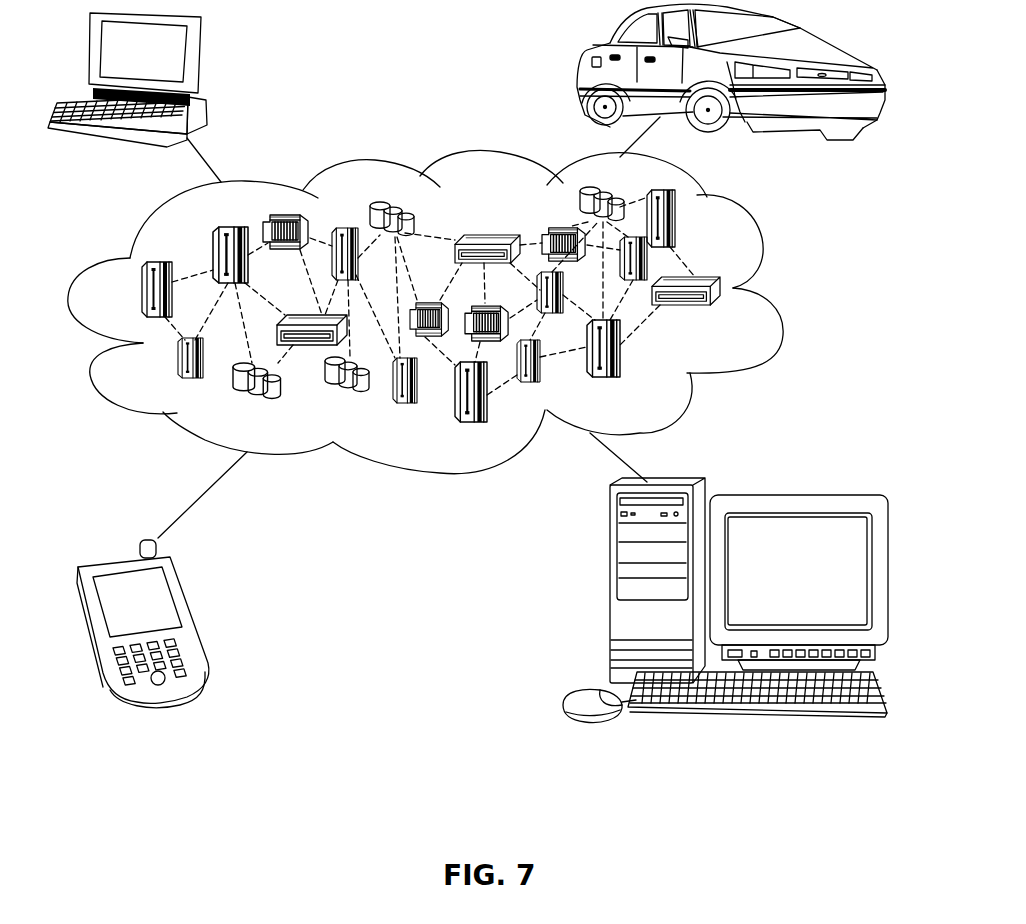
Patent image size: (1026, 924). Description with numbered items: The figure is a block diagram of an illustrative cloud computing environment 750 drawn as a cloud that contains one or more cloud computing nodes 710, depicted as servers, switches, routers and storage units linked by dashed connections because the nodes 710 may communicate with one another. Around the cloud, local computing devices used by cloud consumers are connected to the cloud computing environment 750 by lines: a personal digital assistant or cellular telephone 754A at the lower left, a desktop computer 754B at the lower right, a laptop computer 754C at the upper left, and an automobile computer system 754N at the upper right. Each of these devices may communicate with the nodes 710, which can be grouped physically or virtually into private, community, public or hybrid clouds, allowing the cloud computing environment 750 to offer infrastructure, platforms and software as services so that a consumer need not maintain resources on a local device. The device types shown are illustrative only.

The cloud computing nodes 710 is at (480, 327).
The cloud computing environment 750 is at (763, 250).
The personal digital assistant (PDA) or cellular telephone 754A is at (193, 612).
The desktop computer 754B is at (607, 592).
The laptop computer 754C is at (203, 57).
The automobile computer system 754N is at (583, 60).